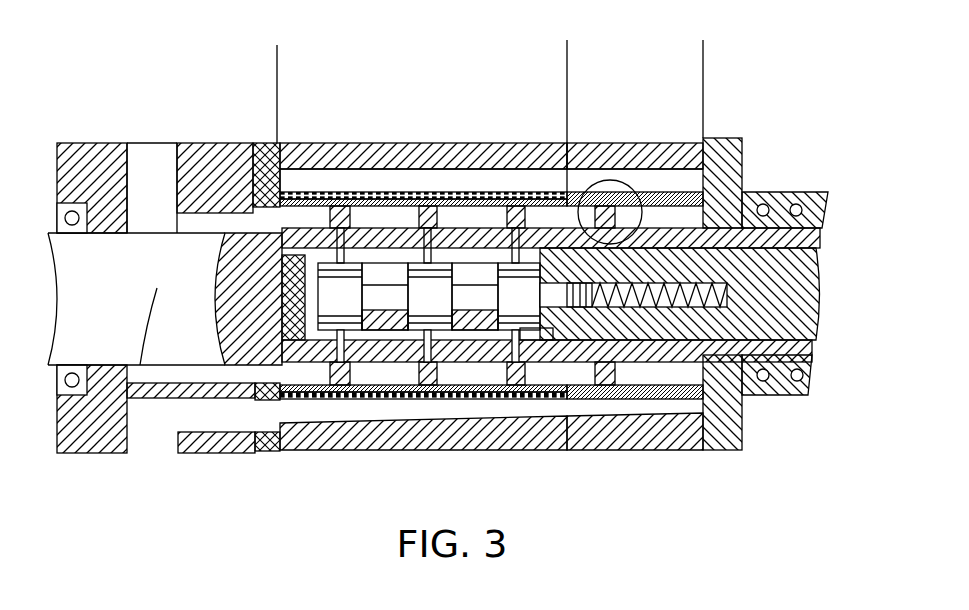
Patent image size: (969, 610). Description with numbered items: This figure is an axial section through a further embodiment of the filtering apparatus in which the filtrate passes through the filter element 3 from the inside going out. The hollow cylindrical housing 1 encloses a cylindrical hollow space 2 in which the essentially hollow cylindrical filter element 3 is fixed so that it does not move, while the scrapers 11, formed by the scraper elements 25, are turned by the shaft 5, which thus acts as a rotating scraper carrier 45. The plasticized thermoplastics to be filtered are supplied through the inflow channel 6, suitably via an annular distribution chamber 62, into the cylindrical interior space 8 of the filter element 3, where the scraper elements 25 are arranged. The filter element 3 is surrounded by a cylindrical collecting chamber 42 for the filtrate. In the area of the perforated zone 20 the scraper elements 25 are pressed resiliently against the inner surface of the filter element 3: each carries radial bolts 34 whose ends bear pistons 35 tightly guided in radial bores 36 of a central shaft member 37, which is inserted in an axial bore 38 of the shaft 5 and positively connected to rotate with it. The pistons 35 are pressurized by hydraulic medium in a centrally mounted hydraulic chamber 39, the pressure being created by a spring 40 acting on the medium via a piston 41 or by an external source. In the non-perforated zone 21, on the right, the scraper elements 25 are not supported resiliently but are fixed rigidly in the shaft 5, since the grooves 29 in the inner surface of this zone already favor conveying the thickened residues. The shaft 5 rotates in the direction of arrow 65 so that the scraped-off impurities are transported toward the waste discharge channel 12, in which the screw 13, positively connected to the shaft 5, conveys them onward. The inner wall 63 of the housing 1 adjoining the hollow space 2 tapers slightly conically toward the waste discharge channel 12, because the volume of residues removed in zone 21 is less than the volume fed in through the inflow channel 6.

The housing 1 is at (721, 140).
The hollow space 2 is at (443, 180).
The filter element 3 is at (310, 188).
The shaft 5 is at (91, 266).
The inflow channel 6 is at (151, 152).
The interior space 8 is at (478, 212).
The scrapers 11 is at (422, 188).
The waste discharge channel 12 is at (742, 400).
The screw 13 is at (724, 204).
The perforated zone 20 is at (277, 60).
The non-perforated zone 21 is at (567, 60).
The scraper elements 25 is at (412, 386).
The grooves 29 is at (666, 184).
The radial bolts 34 is at (306, 372).
The pistons 35 is at (280, 310).
The radial bores 36 is at (290, 256).
The central shaft member 37 is at (810, 292).
The axial bore 38 is at (775, 238).
The hydraulic chamber 39 is at (300, 280).
The spring 40 is at (722, 281).
The piston 41 is at (562, 376).
The collecting chamber 42 is at (337, 183).
The rotating scraper carrier 45 is at (497, 213).
The annular distribution chamber 62 is at (208, 205).
The inner wall 63 is at (694, 188).
The arrow 65 is at (144, 328).